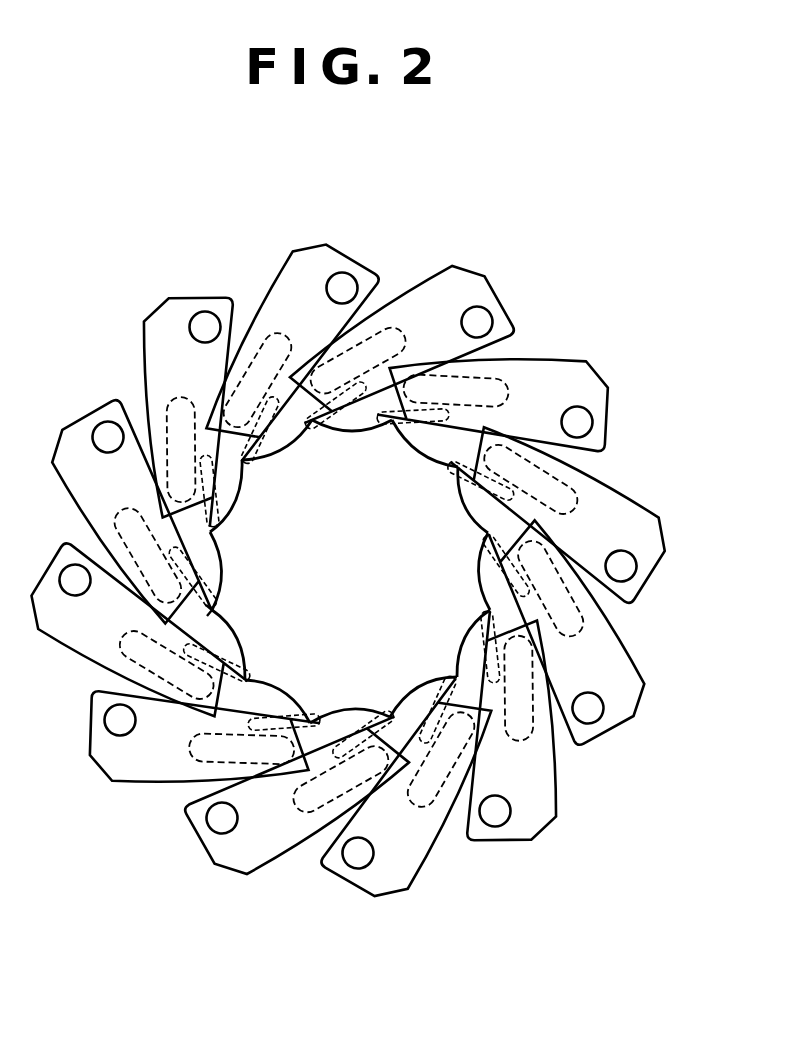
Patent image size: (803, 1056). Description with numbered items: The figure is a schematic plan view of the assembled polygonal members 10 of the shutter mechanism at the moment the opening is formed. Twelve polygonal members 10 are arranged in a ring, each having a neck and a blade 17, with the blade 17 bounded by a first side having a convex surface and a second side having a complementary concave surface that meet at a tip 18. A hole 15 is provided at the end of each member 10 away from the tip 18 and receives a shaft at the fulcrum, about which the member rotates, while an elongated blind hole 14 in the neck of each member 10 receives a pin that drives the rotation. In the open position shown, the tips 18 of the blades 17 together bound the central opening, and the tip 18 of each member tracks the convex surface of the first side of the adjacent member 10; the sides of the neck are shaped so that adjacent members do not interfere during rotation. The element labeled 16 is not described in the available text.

The polygonal member 10 is at (298, 359).
The elongated blind hole 14 is at (287, 338).
The hole 15 is at (343, 285).
The blade body portion 16 is at (410, 483).
The blade 17 is at (222, 568).
The tip 18 is at (222, 612).